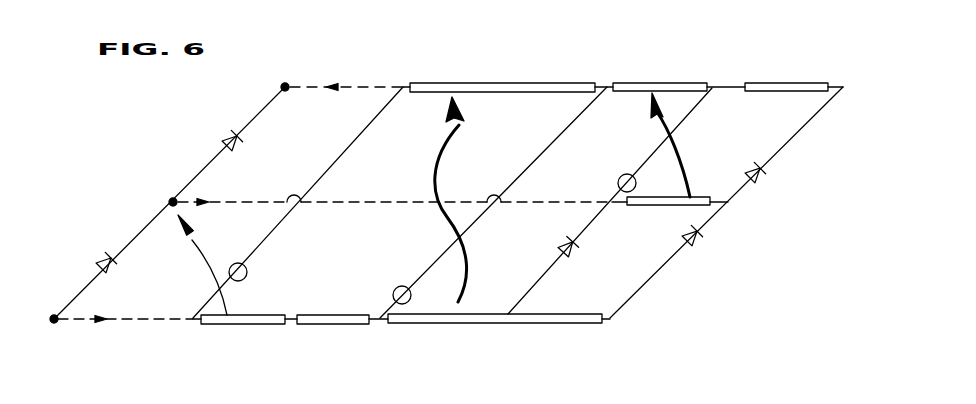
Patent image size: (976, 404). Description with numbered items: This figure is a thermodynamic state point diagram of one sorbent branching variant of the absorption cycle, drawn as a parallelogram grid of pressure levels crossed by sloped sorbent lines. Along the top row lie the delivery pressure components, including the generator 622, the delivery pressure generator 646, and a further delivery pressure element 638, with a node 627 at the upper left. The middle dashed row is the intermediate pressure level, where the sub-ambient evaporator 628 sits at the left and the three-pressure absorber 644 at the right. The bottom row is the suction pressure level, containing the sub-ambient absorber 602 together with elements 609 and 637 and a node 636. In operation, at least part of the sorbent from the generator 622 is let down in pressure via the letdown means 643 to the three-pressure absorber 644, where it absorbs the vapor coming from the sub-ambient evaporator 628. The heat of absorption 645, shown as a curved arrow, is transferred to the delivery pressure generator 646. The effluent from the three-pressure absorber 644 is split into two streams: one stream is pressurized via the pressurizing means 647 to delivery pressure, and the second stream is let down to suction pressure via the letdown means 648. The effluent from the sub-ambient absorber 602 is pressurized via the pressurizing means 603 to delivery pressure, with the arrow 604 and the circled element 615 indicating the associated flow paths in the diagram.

The sub-ambient absorber 602 is at (217, 325).
The pressurizing means 603 is at (238, 263).
The current path arrow 604 is at (191, 265).
The resistive element 609 is at (333, 314).
The current source 615 is at (399, 286).
The generator 622 is at (778, 82).
The node 627 is at (281, 81).
The sub-ambient evaporator 628 is at (170, 200).
The node 636 is at (51, 315).
The resistive element 637 is at (540, 314).
The resistive element 638 is at (488, 82).
The pressure letdown means 643 is at (764, 178).
The 3P absorber 644 is at (655, 207).
The heat of absorption 645 is at (656, 145).
The delivery pressure generator 646 is at (657, 82).
The pressurizing means 647 is at (623, 176).
The letdown means 648 is at (581, 251).